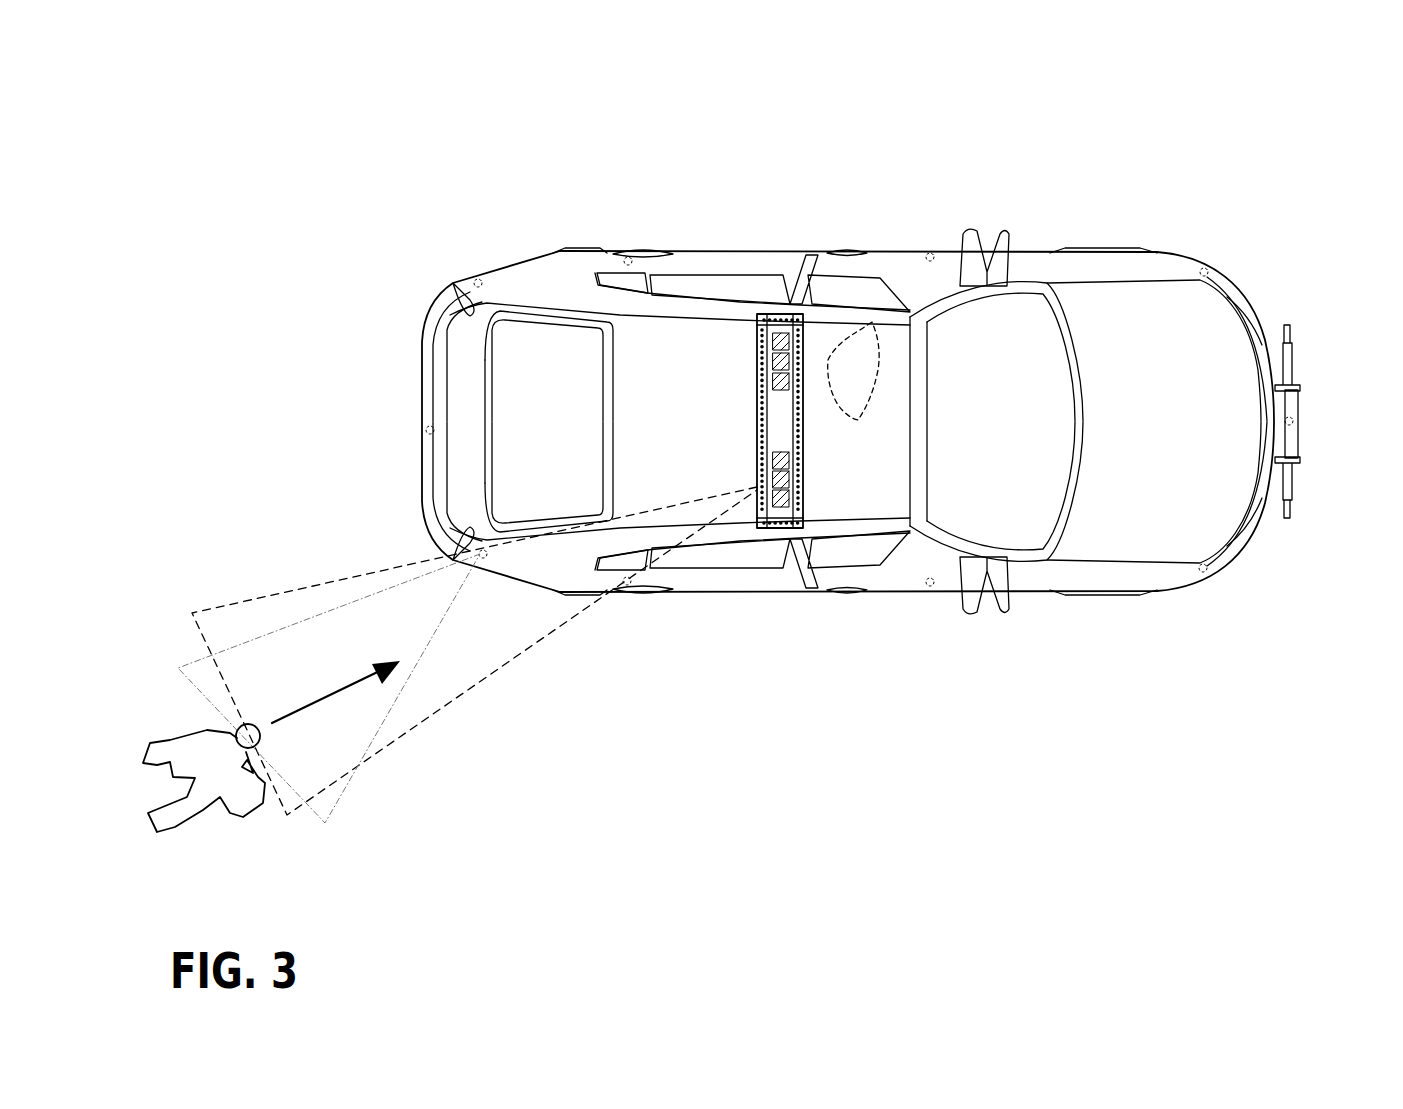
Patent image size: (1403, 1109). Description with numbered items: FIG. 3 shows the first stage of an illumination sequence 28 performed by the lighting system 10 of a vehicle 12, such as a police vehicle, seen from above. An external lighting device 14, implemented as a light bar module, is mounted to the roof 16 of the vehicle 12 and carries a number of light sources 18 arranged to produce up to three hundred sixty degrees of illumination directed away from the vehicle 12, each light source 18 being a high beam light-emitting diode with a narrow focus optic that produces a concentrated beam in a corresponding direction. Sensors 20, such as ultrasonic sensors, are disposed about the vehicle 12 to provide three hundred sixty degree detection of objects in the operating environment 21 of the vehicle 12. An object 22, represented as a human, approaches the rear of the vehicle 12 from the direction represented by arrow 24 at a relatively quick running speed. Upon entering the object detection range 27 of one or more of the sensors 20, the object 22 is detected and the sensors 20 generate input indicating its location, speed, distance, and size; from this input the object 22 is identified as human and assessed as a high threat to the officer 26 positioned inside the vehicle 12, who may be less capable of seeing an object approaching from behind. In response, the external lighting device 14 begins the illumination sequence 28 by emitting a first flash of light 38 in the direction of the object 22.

The lighting system 10 is at (1055, 137).
The vehicle 12 is at (550, 250).
The external lighting device 14 is at (820, 295).
The roof 16 is at (741, 345).
The light sources 18 is at (757, 520).
The sensors 20 is at (477, 279).
The operating environment 21 is at (787, 797).
The object 22 is at (235, 807).
The arrow 24 is at (332, 690).
The officer 26 is at (873, 322).
The object detection range 27 is at (328, 815).
The illumination sequence 28 is at (478, 697).
The first flash of light 38 is at (438, 712).